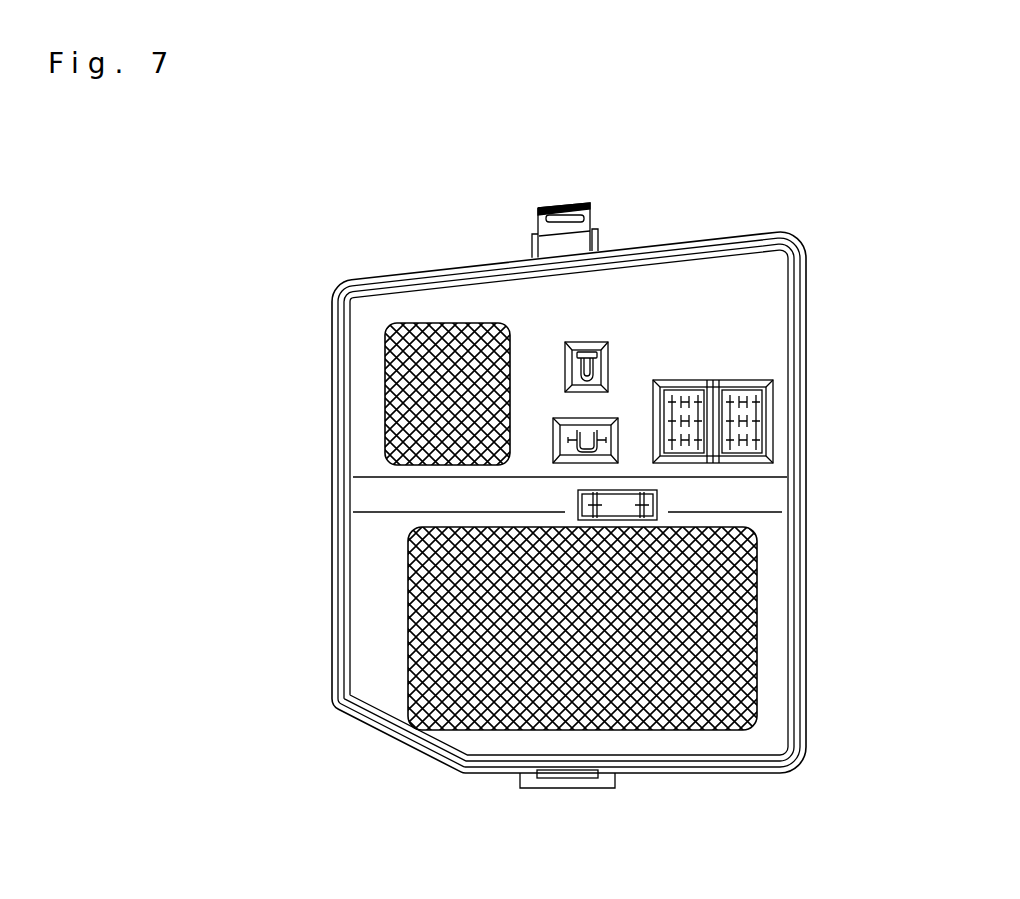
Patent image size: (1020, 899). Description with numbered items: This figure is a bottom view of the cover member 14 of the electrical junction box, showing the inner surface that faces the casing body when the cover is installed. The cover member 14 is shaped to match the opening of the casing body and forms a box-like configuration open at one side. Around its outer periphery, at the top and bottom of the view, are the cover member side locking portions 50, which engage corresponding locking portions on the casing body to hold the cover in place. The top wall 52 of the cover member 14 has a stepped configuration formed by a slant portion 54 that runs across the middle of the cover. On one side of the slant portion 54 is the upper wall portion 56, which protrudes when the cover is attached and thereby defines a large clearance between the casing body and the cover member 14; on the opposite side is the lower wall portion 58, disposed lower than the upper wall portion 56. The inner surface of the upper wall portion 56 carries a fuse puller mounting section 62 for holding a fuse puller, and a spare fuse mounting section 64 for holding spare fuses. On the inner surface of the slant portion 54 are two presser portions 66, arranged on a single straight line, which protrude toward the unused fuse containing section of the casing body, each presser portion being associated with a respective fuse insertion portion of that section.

The cover member 14 is at (851, 181).
The cover member side locking portions 50 is at (565, 230).
The top wall 52 is at (786, 276).
The slant portion 54 is at (756, 497).
The upper wall portion 56 is at (765, 336).
The lower wall portion 58 is at (765, 671).
The fuse puller mounting section 62 is at (575, 330).
The spare fuse mounting section 64 is at (779, 375).
The presser portions 66 is at (666, 523).